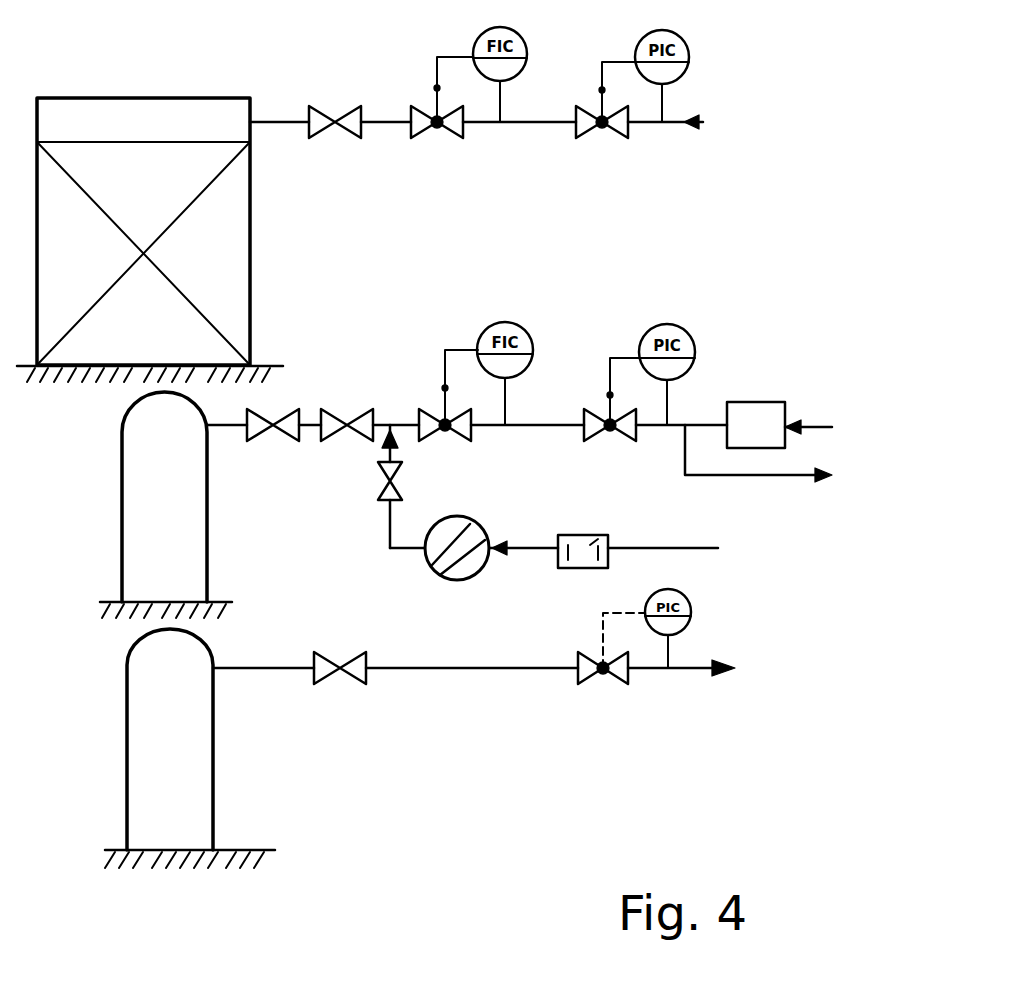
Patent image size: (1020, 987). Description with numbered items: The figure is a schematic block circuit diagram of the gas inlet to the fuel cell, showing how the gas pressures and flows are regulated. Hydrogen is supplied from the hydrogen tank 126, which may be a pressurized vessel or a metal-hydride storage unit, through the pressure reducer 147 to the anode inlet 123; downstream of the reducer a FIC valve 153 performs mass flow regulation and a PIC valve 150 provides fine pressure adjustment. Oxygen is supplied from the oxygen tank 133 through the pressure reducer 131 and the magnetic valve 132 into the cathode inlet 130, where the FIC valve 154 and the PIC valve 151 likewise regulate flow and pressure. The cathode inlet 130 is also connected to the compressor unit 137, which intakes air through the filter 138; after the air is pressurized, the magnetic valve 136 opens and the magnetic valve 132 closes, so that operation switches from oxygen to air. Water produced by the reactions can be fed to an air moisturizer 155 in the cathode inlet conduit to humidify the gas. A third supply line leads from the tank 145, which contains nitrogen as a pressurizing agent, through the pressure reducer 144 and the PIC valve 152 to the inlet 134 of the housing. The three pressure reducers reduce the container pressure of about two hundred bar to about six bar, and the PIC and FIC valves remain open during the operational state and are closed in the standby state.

The hydrogen tank 126 is at (232, 252).
The pressure reducer 147 is at (318, 108).
The FIC valve 153 is at (418, 128).
The PIC valve 150 is at (580, 110).
The anode inlet 123 is at (668, 124).
The oxygen tank 133 is at (145, 553).
The pressure reducer 131 is at (257, 432).
The magnetic valve 132 is at (347, 425).
The magnetic valve 136 is at (396, 481).
The FIC valve 154 is at (428, 395).
The PIC valve 151 is at (585, 410).
The air moisturizer 155 is at (745, 412).
The cathode inlet 130 is at (735, 477).
The compressor unit 137 is at (462, 554).
The filter 138 is at (592, 546).
The tank 145 is at (155, 805).
The pressure reducer 144 is at (330, 680).
The PIC valve 152 is at (590, 688).
The inlet 134 is at (682, 675).